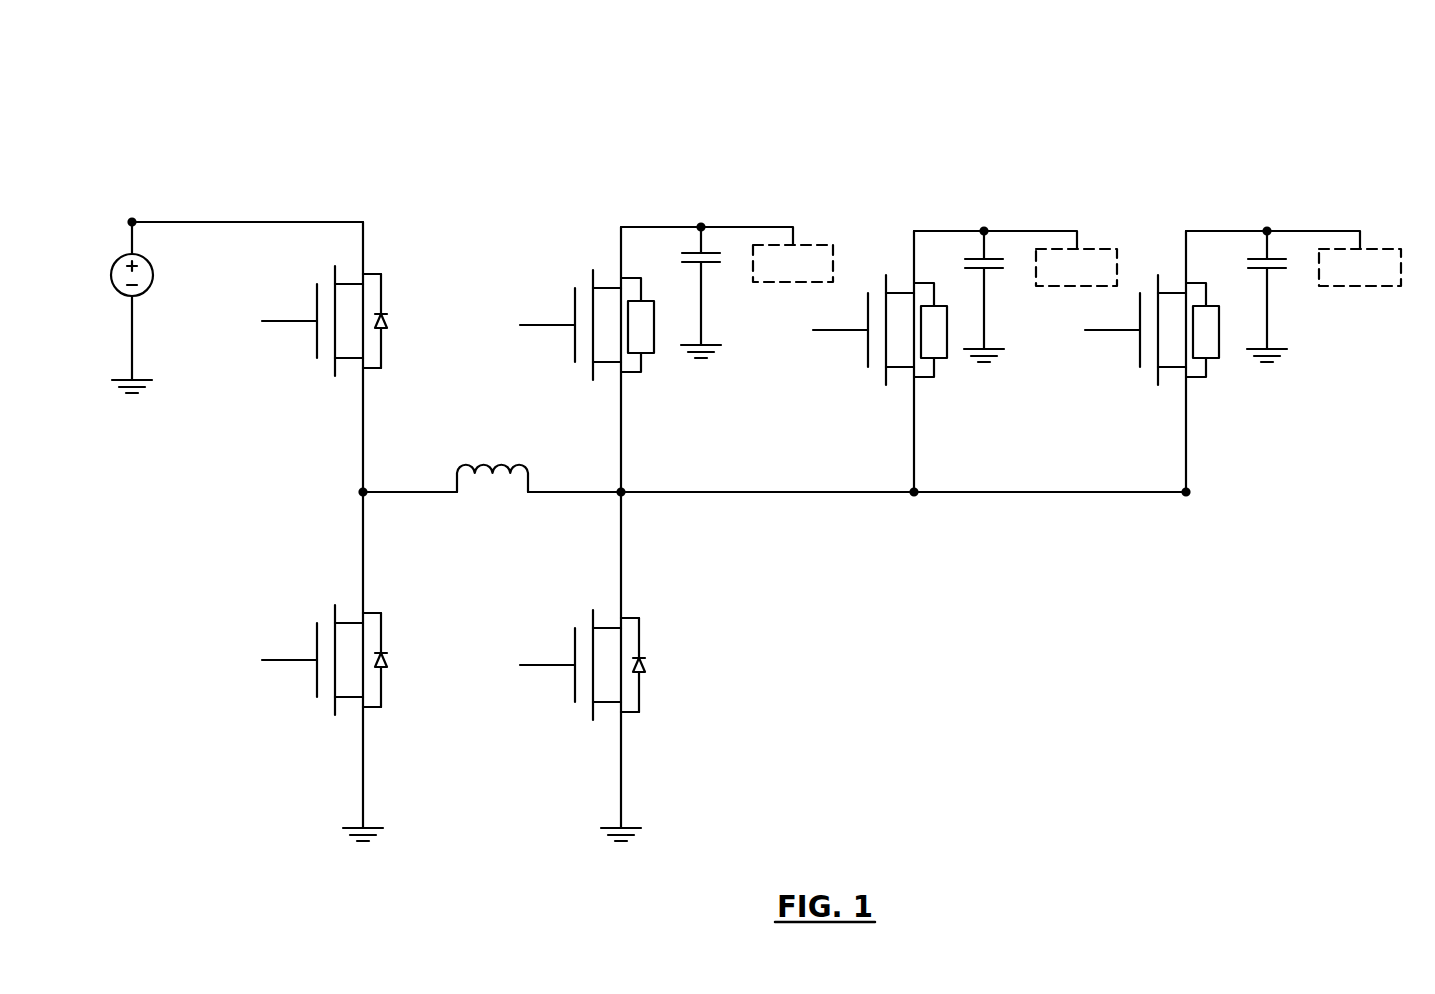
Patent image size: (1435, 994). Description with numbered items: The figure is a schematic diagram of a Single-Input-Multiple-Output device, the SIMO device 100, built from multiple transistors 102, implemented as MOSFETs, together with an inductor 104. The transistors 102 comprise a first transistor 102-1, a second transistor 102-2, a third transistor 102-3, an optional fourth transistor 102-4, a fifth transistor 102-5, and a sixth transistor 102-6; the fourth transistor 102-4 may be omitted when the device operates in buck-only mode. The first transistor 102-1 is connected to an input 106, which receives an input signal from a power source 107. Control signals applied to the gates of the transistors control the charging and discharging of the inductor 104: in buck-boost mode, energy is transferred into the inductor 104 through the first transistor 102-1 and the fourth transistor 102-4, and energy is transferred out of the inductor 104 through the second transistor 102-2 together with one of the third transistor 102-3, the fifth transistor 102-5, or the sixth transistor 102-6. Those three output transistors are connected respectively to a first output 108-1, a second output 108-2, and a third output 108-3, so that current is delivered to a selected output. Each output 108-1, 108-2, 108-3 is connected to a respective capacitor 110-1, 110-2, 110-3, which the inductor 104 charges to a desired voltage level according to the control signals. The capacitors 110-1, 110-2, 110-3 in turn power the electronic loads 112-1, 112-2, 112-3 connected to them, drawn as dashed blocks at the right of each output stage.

The SIMO device 100 is at (206, 58).
The transistors 102 is at (293, 357).
The first transistor 102-1 is at (317, 299).
The second transistor 102-2 is at (317, 638).
The third transistor 102-3 is at (575, 300).
The fourth transistor 102-4 is at (575, 642).
The fifth transistor 102-5 is at (868, 352).
The sixth transistor 102-6 is at (1140, 358).
The inductor 104 is at (493, 470).
The input 106 is at (260, 222).
The power source 107 is at (125, 297).
The first output 108-1 is at (787, 227).
The second output 108-2 is at (1053, 231).
The third output 108-3 is at (1291, 231).
The first capacitor 110-1 is at (707, 264).
The second capacitor 110-2 is at (997, 270).
The third capacitor 110-3 is at (1286, 270).
The first electronic load 112-1 is at (815, 245).
The second electronic load 112-2 is at (1097, 249).
The third electronic load 112-3 is at (1360, 286).